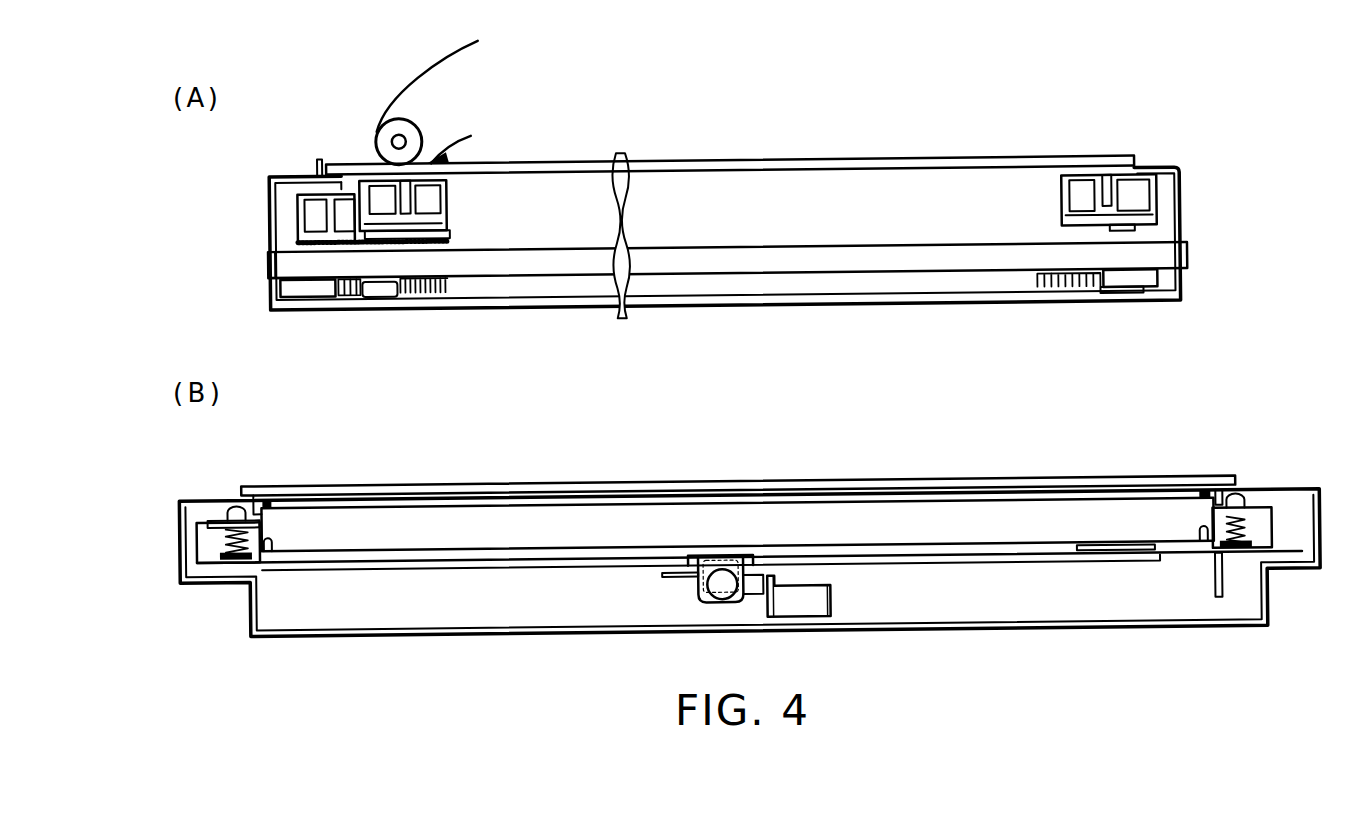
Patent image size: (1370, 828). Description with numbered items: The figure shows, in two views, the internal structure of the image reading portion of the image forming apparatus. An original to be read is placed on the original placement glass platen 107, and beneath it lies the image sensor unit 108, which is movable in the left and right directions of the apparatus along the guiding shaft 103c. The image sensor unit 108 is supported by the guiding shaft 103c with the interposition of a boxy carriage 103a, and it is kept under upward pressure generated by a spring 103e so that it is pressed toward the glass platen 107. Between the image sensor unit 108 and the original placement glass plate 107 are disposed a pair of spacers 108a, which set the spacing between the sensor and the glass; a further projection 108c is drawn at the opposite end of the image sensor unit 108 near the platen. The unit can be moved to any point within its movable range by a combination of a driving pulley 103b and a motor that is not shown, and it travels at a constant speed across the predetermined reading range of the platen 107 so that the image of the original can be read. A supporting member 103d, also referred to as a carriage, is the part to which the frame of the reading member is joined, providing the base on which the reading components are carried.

The original placement glass platen 107 is at (905, 165).
The image sensor unit 108 is at (433, 195).
The spacer 108a is at (270, 498).
The projection of image sensor unit 108c is at (1205, 488).
The boxy carriage 103a is at (447, 287).
The driving pulley 103b is at (1103, 293).
The guiding shaft 103c is at (310, 267).
The supporting member 103d is at (1195, 557).
The spring 103e is at (237, 525).